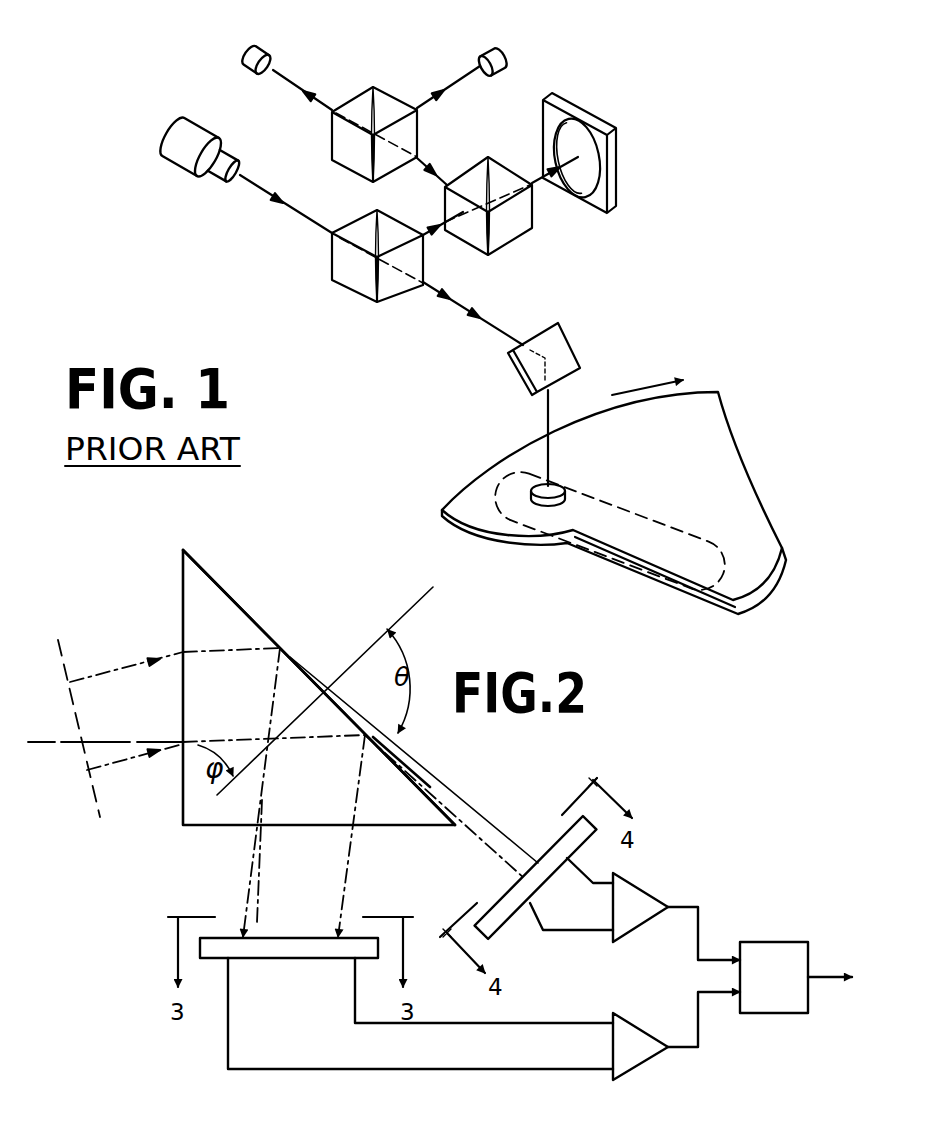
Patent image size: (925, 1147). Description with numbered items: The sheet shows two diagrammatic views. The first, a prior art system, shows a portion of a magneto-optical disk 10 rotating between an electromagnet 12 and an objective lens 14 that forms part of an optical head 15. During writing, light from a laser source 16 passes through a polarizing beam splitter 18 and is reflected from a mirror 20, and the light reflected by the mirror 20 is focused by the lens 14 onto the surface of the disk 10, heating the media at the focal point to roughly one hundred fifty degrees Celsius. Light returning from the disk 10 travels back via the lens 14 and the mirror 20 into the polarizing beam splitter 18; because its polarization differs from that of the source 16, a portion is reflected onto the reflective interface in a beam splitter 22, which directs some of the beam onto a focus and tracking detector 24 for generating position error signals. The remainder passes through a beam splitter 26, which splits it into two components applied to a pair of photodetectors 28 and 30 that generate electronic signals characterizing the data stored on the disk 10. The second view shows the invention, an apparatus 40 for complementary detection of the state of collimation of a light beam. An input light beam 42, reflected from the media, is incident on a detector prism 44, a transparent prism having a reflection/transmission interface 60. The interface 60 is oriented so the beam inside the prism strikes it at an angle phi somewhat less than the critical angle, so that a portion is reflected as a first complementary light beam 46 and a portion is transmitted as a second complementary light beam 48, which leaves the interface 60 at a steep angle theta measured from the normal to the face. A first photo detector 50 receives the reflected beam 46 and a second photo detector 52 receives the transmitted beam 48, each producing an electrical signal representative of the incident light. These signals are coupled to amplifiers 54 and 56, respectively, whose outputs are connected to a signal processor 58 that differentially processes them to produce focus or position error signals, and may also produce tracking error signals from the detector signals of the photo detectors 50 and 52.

In FIG. 1, the magneto-optical disk 10 is at (705, 465).
In FIG. 1, the electromagnet 12 is at (653, 570).
In FIG. 1, the objective lens 14 is at (562, 485).
In FIG. 1, the optical head 15 is at (426, 344).
In FIG. 1, the laser source 16 is at (180, 157).
In FIG. 1, the polarizing beam splitter 18 is at (332, 275).
In FIG. 1, the mirror 20 is at (562, 352).
In FIG. 1, the beam splitter 22 is at (515, 241).
In FIG. 1, the focus and tracking detector 24 is at (612, 180).
In FIG. 1, the beam splitter 26 is at (373, 87).
In FIG. 1, the photodetector 28 is at (262, 44).
In FIG. 1, the photodetector 30 is at (488, 47).
In FIG. 2, the apparatus for complementary detection 40 is at (173, 831).
In FIG. 2, the input light beam 42 is at (123, 668).
In FIG. 2, the detector prism 44 is at (233, 600).
In FIG. 2, the reflected light beam 46 is at (349, 844).
In FIG. 2, the transmitted light beam 48 is at (430, 766).
In FIG. 2, the first photo detector 50 is at (293, 958).
In FIG. 2, the second photo detector 52 is at (510, 924).
In FIG. 2, the amplifier 54 is at (633, 1012).
In FIG. 2, the amplifier 56 is at (637, 882).
In FIG. 2, the signal processor 58 is at (793, 942).
In FIG. 2, the interface 60 is at (335, 703).